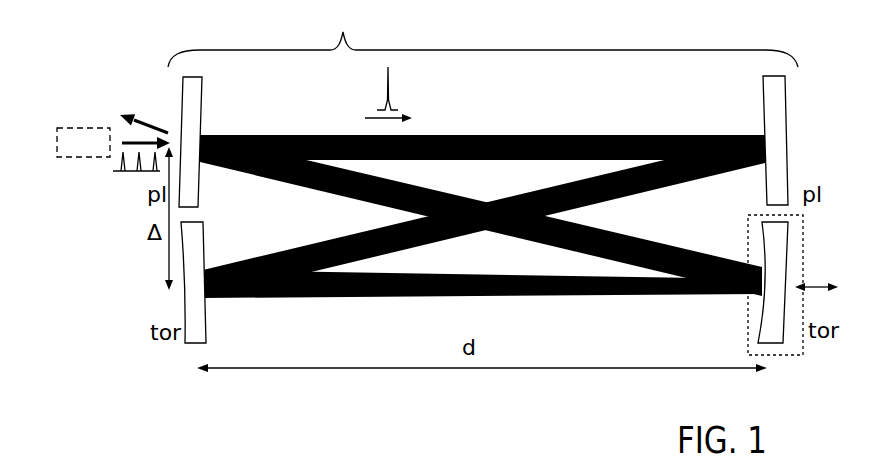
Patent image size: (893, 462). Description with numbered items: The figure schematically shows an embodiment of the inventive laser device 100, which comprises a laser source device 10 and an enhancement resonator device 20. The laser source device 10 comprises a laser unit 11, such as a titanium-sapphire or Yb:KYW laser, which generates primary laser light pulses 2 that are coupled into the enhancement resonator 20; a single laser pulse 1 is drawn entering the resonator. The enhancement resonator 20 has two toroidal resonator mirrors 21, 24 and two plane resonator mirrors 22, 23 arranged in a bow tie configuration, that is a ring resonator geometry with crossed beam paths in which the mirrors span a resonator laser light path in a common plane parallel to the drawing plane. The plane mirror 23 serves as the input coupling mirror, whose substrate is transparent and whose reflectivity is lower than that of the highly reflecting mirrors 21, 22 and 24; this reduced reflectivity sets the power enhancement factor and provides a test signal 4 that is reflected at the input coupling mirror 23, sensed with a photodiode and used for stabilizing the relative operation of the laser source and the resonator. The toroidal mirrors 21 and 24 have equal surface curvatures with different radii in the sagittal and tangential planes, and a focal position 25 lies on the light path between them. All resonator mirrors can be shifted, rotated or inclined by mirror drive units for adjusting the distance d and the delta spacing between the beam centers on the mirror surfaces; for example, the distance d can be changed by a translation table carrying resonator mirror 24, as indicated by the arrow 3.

The laser device 100 is at (123, 64).
The enhancement resonator device 20 is at (353, 24).
The laser source device 10 is at (90, 196).
The laser unit 11 is at (95, 128).
The primary laser light pulses 2 is at (128, 172).
The test signal 4 is at (144, 114).
The laser pulse 1 is at (392, 94).
The focal position 25 is at (490, 287).
The input coupling mirror 23 is at (193, 127).
The plane resonator mirror 22 is at (772, 126).
The toroidal resonator mirror 21 is at (187, 308).
The toroidal resonator mirror 24 is at (777, 307).
The arrow 3 is at (793, 285).